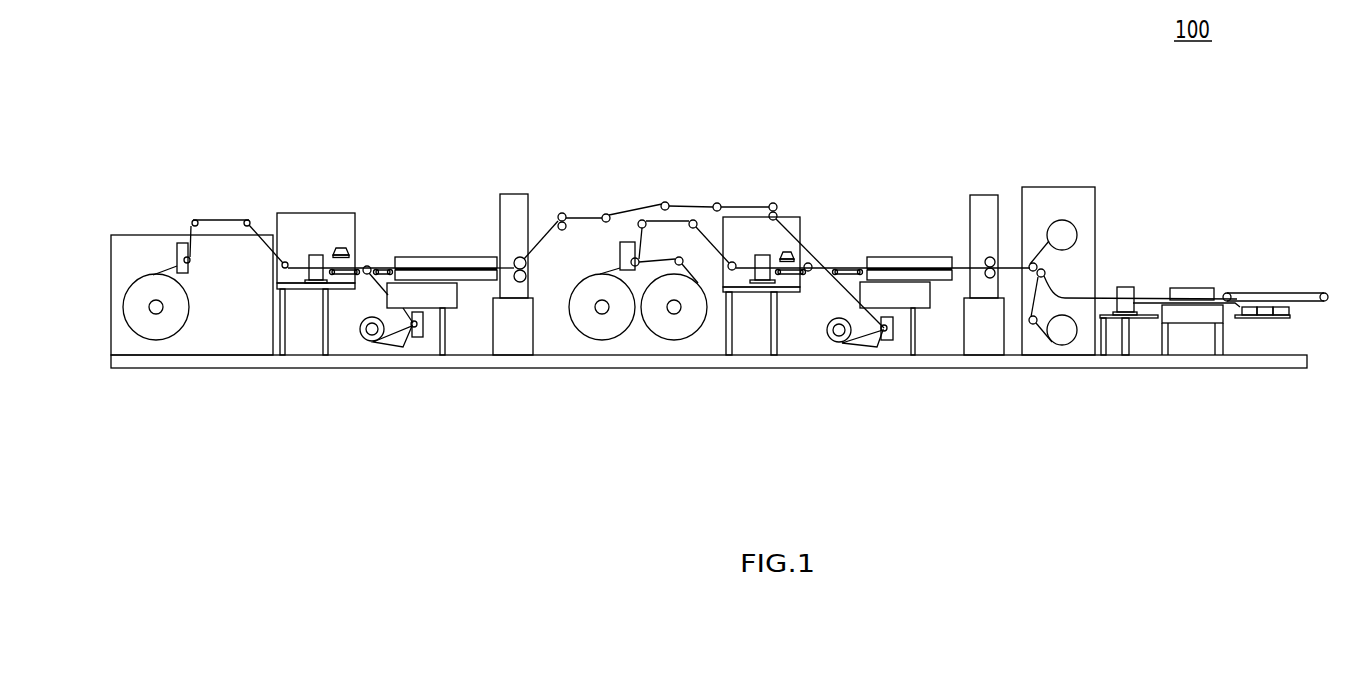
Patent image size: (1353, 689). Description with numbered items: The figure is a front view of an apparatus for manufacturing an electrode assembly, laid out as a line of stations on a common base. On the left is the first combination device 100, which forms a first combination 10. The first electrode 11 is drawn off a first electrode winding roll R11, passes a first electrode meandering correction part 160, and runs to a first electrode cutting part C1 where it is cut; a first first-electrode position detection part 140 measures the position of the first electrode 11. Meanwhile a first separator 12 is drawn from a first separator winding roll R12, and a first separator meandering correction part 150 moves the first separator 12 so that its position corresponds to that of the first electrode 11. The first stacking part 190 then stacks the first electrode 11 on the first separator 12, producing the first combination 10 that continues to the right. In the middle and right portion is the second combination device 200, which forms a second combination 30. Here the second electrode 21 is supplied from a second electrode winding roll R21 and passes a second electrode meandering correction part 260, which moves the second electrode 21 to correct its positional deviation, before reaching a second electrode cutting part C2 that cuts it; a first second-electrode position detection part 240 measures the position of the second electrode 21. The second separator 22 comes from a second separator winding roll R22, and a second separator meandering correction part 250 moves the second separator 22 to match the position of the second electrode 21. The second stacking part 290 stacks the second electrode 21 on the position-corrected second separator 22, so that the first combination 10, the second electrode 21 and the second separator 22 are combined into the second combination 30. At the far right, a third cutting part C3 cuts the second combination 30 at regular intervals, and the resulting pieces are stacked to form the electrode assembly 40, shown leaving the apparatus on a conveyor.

The first combination device 100 is at (265, 163).
The second combination device 200 is at (648, 143).
The first combination 10 is at (748, 216).
The first electrode 11 is at (222, 219).
The first separator 12 is at (366, 275).
The second electrode 21 is at (612, 269).
The second separator 22 is at (835, 274).
The second combination 30 is at (1010, 255).
The electrode assembly 40 is at (1290, 312).
The first first-electrode position detection part 140 is at (341, 247).
The first separator meandering correction part 150 is at (418, 338).
The first electrode meandering correction part 160 is at (178, 247).
The first stacking part 190 is at (445, 247).
The first second-electrode position detection part 240 is at (788, 250).
The second separator meandering correction part 250 is at (888, 341).
The second electrode meandering correction part 260 is at (628, 241).
The second stacking part 290 is at (900, 247).
The first electrode cutting part C1 is at (317, 239).
The second electrode cutting part C2 is at (762, 244).
The third cutting part C3 is at (1128, 276).
The first electrode winding roll R11 is at (153, 335).
The first separator winding roll R12 is at (373, 342).
The second electrode winding roll R21 is at (602, 340).
The second separator winding roll R22 is at (842, 343).